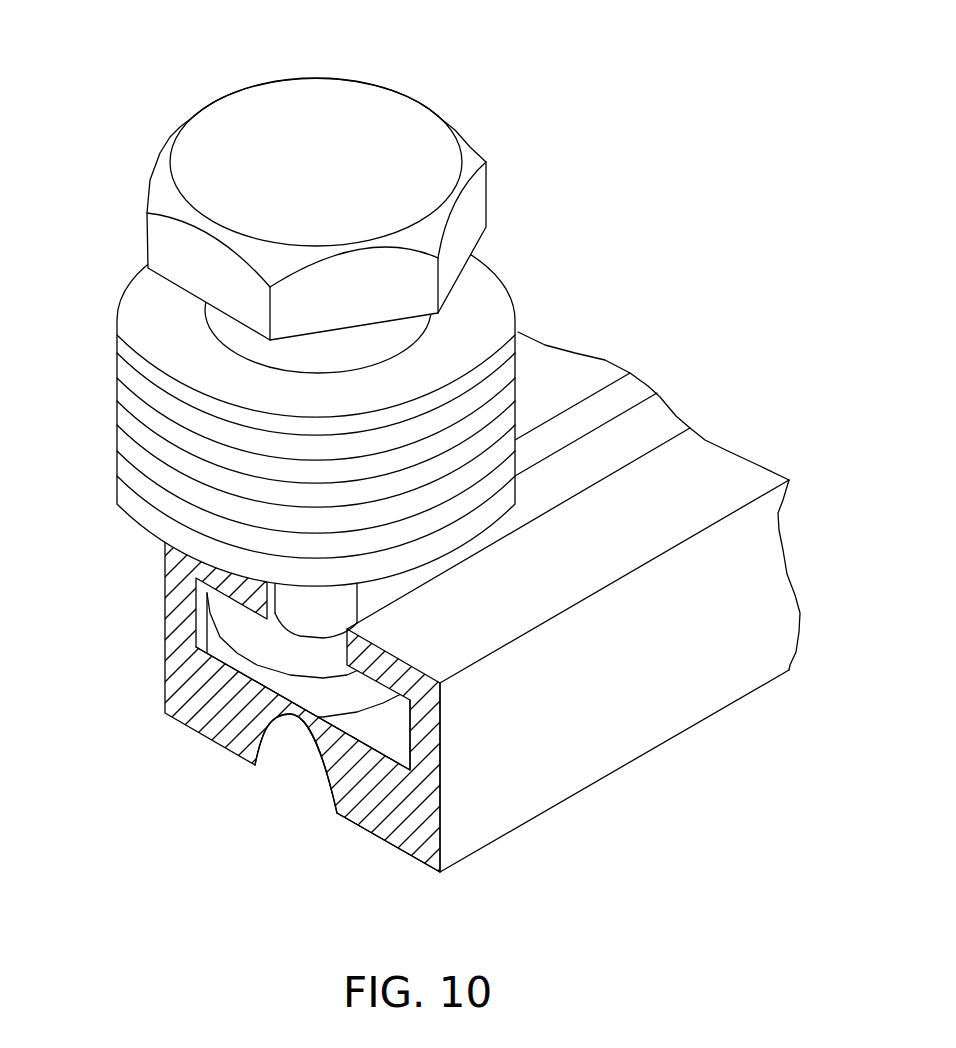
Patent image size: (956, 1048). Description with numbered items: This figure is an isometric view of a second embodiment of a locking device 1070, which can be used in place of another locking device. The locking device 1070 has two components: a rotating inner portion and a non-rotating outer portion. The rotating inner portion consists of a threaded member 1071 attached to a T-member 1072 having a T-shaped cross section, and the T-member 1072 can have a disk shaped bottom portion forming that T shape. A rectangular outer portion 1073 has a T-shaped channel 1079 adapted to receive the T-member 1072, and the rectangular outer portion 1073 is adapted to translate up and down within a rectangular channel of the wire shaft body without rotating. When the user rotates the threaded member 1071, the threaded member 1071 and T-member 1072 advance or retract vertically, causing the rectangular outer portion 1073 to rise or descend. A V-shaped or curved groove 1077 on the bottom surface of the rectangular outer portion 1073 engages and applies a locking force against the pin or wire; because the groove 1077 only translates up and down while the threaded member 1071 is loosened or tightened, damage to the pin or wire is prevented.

The locking device 1070 is at (392, 88).
The threaded member 1071 is at (137, 427).
The T-member 1072 is at (243, 680).
The rectangular outer portion 1073 is at (562, 731).
The groove 1077 is at (287, 717).
The T-shaped channel 1079 is at (392, 743).